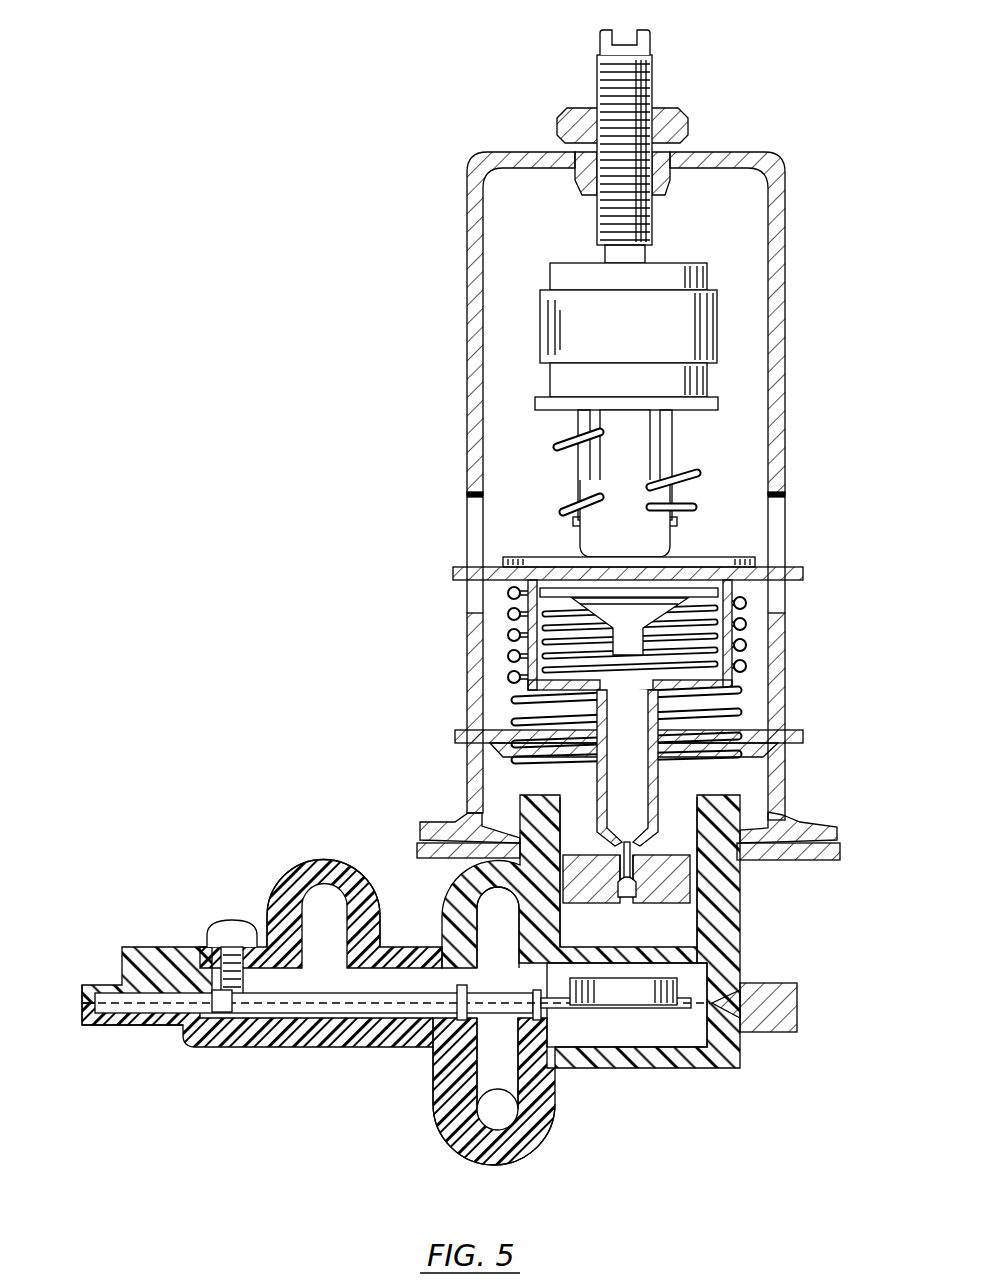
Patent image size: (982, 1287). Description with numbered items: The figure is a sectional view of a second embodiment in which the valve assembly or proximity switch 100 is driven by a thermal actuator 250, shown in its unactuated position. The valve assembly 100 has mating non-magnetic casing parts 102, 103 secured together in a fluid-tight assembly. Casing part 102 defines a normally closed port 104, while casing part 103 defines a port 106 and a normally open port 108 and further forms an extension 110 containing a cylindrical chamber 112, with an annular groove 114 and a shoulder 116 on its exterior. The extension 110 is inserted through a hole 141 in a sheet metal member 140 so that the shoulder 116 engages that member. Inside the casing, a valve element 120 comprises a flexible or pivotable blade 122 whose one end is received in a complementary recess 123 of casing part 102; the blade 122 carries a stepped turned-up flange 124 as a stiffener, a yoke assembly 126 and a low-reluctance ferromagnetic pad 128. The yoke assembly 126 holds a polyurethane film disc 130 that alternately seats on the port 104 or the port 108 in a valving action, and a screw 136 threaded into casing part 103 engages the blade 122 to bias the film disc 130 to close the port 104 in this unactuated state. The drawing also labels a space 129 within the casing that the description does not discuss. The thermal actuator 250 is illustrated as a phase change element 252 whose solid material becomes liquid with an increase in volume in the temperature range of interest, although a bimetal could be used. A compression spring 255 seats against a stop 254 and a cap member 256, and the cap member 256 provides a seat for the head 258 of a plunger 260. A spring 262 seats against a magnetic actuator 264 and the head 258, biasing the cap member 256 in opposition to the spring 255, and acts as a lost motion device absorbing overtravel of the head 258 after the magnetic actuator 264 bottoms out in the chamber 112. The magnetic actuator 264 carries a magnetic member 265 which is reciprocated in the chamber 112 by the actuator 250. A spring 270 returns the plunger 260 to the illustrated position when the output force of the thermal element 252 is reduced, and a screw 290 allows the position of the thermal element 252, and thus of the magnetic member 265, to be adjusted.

The valve assembly 100 is at (435, 1155).
The casing part 102 is at (733, 1068).
The casing part 103 is at (130, 947).
The normally closed port 104 is at (433, 1083).
The port 106 is at (300, 862).
The normally open port 108 is at (477, 950).
The extension 110 is at (740, 962).
The cylindrical chamber 112 is at (628, 872).
The annular groove 114 is at (757, 828).
The shoulder 116 is at (747, 858).
The valve element 120 is at (220, 1000).
The blade 122 is at (243, 1007).
The recess 123 is at (145, 1025).
The stepped turned up flange 124 is at (330, 997).
The yoke assembly 126 is at (553, 1100).
The ferro magnetic pad 128 is at (663, 1020).
The chamber 129 is at (627, 1005).
The film disc 130 is at (497, 1167).
The screw 136 is at (221, 935).
The sheet metal member 140 is at (417, 847).
The hole 141 is at (468, 820).
The thermal actuator 250 is at (437, 297).
The phase change element 252 is at (655, 305).
The stop 254 is at (798, 733).
The compression spring 255 is at (715, 650).
The cap member 256 is at (800, 572).
The head 258 is at (695, 600).
The plunger 260 is at (680, 447).
The spring 262 is at (713, 640).
The magnetic actuator 264 is at (660, 770).
The magnetic member 265 is at (650, 893).
The spring 270 is at (573, 507).
The screw 290 is at (652, 63).